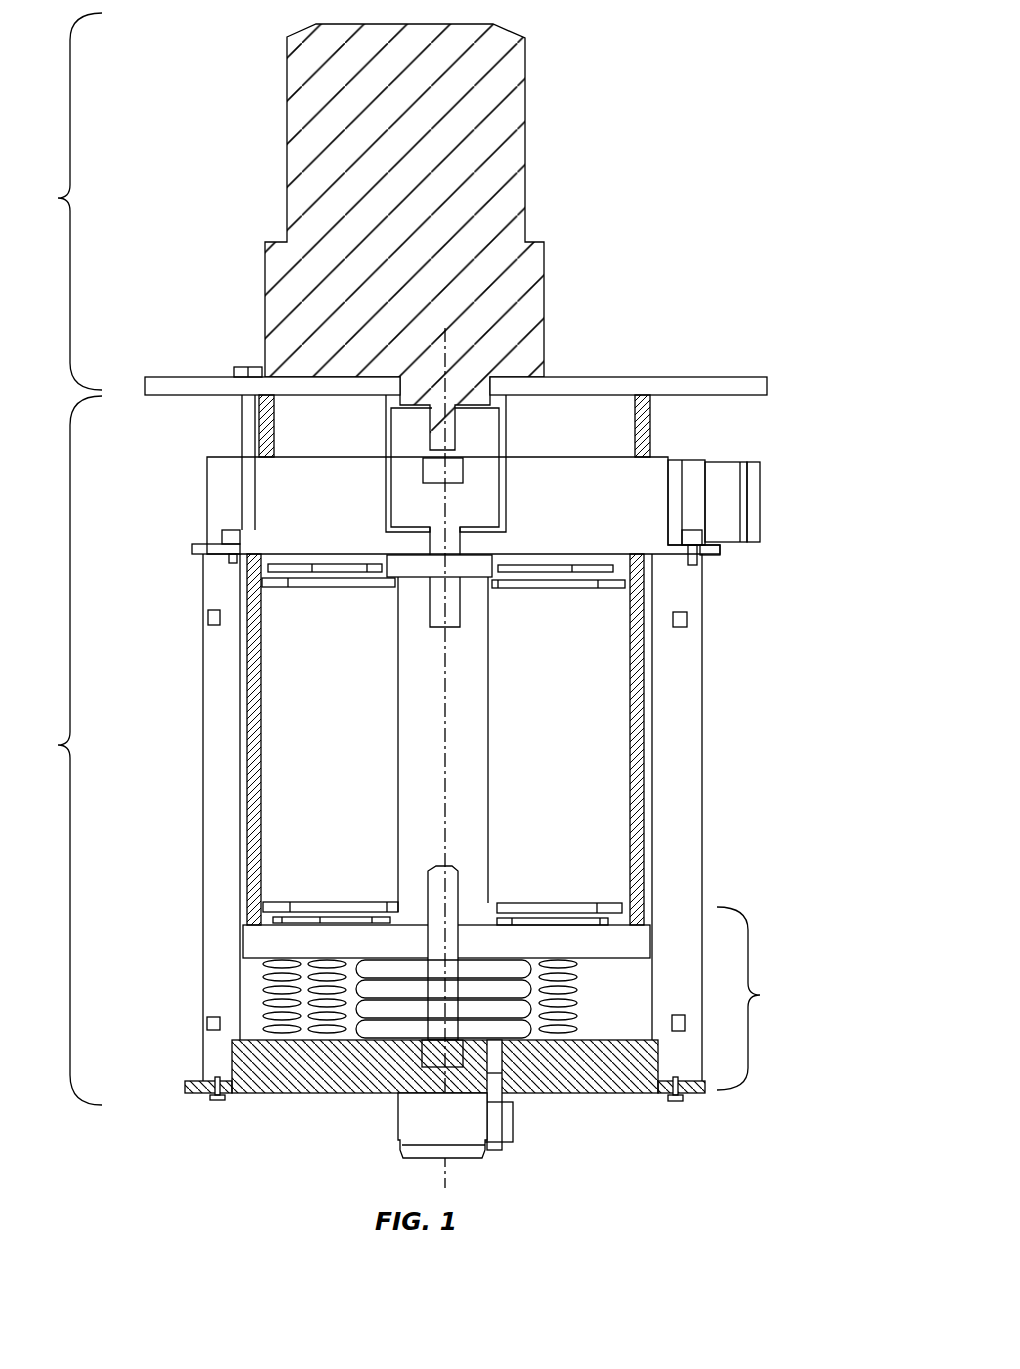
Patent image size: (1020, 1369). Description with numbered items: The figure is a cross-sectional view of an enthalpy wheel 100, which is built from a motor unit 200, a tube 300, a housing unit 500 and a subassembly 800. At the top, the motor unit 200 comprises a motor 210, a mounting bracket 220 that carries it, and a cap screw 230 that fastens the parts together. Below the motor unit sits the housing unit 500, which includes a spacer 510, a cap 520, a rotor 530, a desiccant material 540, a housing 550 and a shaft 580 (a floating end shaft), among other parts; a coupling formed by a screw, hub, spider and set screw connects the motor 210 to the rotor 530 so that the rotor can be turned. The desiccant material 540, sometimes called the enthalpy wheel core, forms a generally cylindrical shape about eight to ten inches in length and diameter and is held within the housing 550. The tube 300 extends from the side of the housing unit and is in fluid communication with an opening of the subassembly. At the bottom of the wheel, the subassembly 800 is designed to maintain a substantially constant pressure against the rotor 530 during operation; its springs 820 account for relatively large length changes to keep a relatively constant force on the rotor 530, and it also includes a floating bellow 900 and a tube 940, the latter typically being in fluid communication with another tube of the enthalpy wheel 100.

The enthalpy wheel 100 is at (678, 224).
The motor unit 200 is at (395, 278).
The motor 210 is at (442, 237).
The mounting bracket 220 is at (427, 430).
The cap screw 230 is at (203, 427).
The tube 300 is at (748, 485).
The housing unit 500 is at (402, 758).
The spacer 510 is at (482, 396).
The cap 520 is at (475, 480).
The rotor 530 is at (514, 739).
The desiccant material 540 is at (522, 726).
The housing 550 is at (492, 817).
The shaft 580 is at (602, 758).
The subassembly 800 is at (459, 1039).
The springs 820 is at (348, 1049).
The bellow 900 is at (445, 1094).
The tube 940 is at (414, 1105).